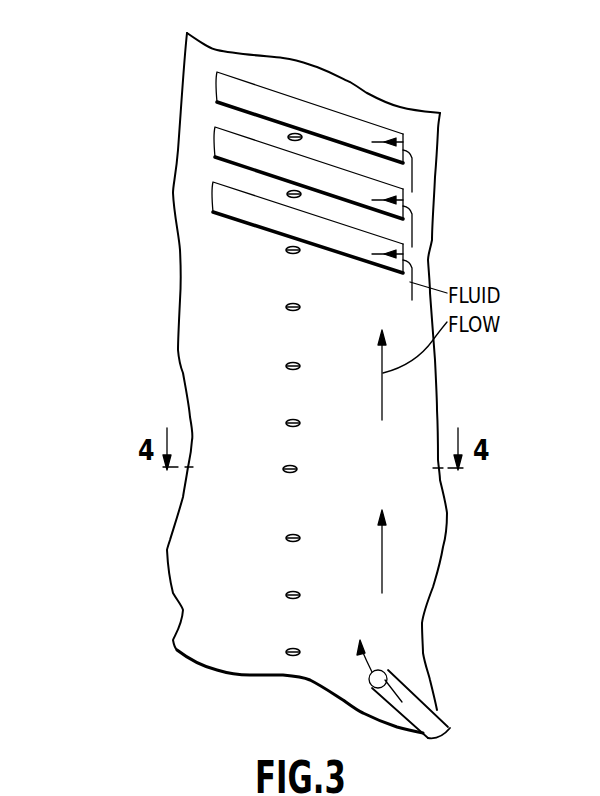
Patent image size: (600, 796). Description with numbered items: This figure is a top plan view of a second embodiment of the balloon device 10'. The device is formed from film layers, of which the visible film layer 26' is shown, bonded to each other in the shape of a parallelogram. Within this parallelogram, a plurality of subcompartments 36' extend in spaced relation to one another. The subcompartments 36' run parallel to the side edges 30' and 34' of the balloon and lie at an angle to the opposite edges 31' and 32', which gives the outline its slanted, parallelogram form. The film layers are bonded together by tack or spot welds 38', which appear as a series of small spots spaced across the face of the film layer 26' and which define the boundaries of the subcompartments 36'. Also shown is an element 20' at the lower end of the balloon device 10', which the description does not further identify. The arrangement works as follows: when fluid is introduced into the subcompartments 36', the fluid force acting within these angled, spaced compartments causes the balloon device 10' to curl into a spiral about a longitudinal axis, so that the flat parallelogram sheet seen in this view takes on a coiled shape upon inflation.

The balloon device 10' is at (270, 381).
The fluid supply tube 20' is at (431, 689).
The film layer 26' is at (442, 461).
The side edge 30' is at (313, 71).
The opposite edge 31' is at (152, 341).
The opposite edge 32' is at (464, 411).
The side edge 34' is at (300, 692).
The subcompartments 36' is at (359, 186).
The tack or spot welds 38' is at (302, 328).